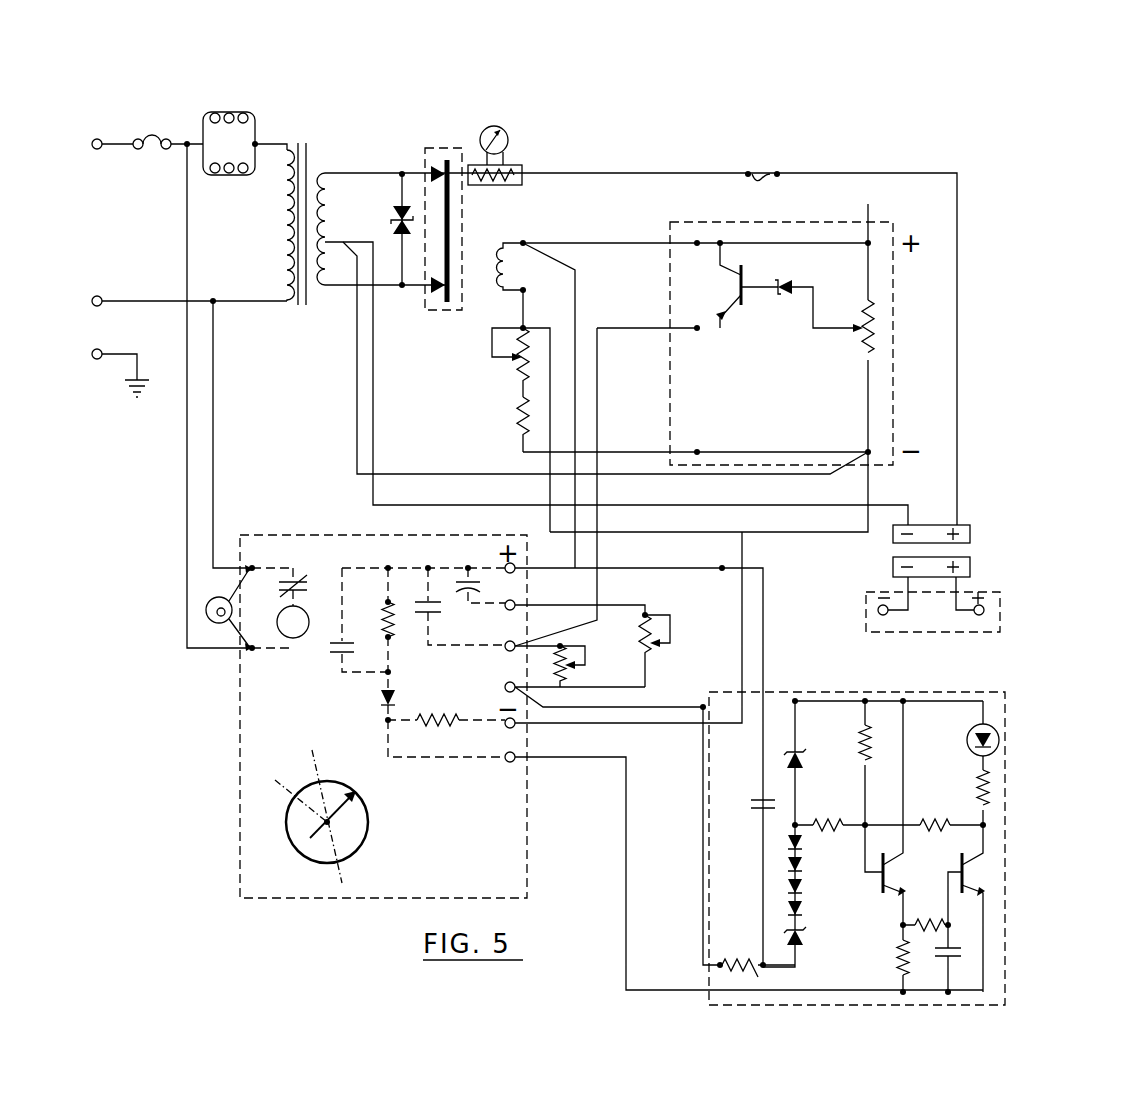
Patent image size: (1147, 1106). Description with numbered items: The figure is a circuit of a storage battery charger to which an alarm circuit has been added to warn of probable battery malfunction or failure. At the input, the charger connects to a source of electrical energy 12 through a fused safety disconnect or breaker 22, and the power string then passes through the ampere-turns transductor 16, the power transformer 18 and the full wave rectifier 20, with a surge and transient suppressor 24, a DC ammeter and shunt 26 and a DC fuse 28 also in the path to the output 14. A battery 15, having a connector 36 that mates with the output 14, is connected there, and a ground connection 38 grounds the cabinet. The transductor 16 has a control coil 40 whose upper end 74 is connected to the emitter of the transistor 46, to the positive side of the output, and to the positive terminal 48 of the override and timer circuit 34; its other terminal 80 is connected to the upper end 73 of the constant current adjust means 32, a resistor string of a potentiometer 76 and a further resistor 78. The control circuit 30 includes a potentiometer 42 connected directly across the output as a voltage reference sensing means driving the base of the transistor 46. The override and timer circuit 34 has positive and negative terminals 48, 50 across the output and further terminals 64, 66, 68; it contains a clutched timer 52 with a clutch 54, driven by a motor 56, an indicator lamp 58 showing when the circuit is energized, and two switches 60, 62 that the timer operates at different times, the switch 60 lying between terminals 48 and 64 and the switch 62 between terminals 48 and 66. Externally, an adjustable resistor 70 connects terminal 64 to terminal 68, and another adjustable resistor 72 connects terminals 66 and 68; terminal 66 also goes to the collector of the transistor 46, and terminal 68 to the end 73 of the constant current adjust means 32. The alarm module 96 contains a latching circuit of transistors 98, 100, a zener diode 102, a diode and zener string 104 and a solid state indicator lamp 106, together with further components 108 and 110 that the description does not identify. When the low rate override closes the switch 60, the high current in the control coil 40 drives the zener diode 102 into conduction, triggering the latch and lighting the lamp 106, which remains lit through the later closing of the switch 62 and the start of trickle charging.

The source of electrical energy 12 is at (97, 138).
The fused safety disconnect or breaker 22 is at (152, 136).
The ampere-turns transductor 16 is at (233, 112).
The power transformer 18 is at (312, 143).
The full wave rectifier 20 is at (427, 150).
The surge and transient suppressor 24 is at (394, 212).
The DC ammeter and shunt 26 is at (508, 140).
The DC fuse 28 is at (760, 172).
The control coil 40 is at (497, 247).
The upper end of the control coil 74 is at (524, 242).
The terminal of the control coil 80 is at (523, 290).
The upper end of the resistor string 73 is at (523, 328).
The constant current adjust means 32 is at (500, 394).
The potentiometer 76 is at (520, 368).
The further resistor 78 is at (520, 424).
The transistor 46 is at (735, 288).
The potentiometer 42 is at (862, 346).
The control circuit 30 is at (899, 358).
The output 14 is at (935, 525).
The connector 36 is at (893, 566).
The battery 15 is at (890, 632).
The override and timer circuit 34 is at (303, 535).
The positive terminal 48 is at (507, 566).
The terminal 64 is at (508, 609).
The terminal 66 is at (505, 648).
The terminal 68 is at (505, 687).
The negative terminal 50 is at (505, 727).
The clutch 54 is at (386, 603).
The switch 62 is at (428, 615).
The switch 60 is at (468, 598).
The indicator lamp 58 is at (206, 612).
The motor 56 is at (300, 638).
The clutched timer 52 is at (368, 820).
The adjustable resistor 70 is at (650, 614).
The adjustable resistor 72 is at (565, 645).
The ground connection 38 is at (97, 360).
The alarm module 96 is at (825, 692).
The capacitor 108 is at (760, 798).
The zener diode 102 is at (805, 760).
The diode and zener string 104 is at (803, 879).
The transistor 98 is at (872, 882).
The transistor 100 is at (958, 870).
The indicator lamp 106 is at (968, 743).
The resistor 110 is at (735, 963).